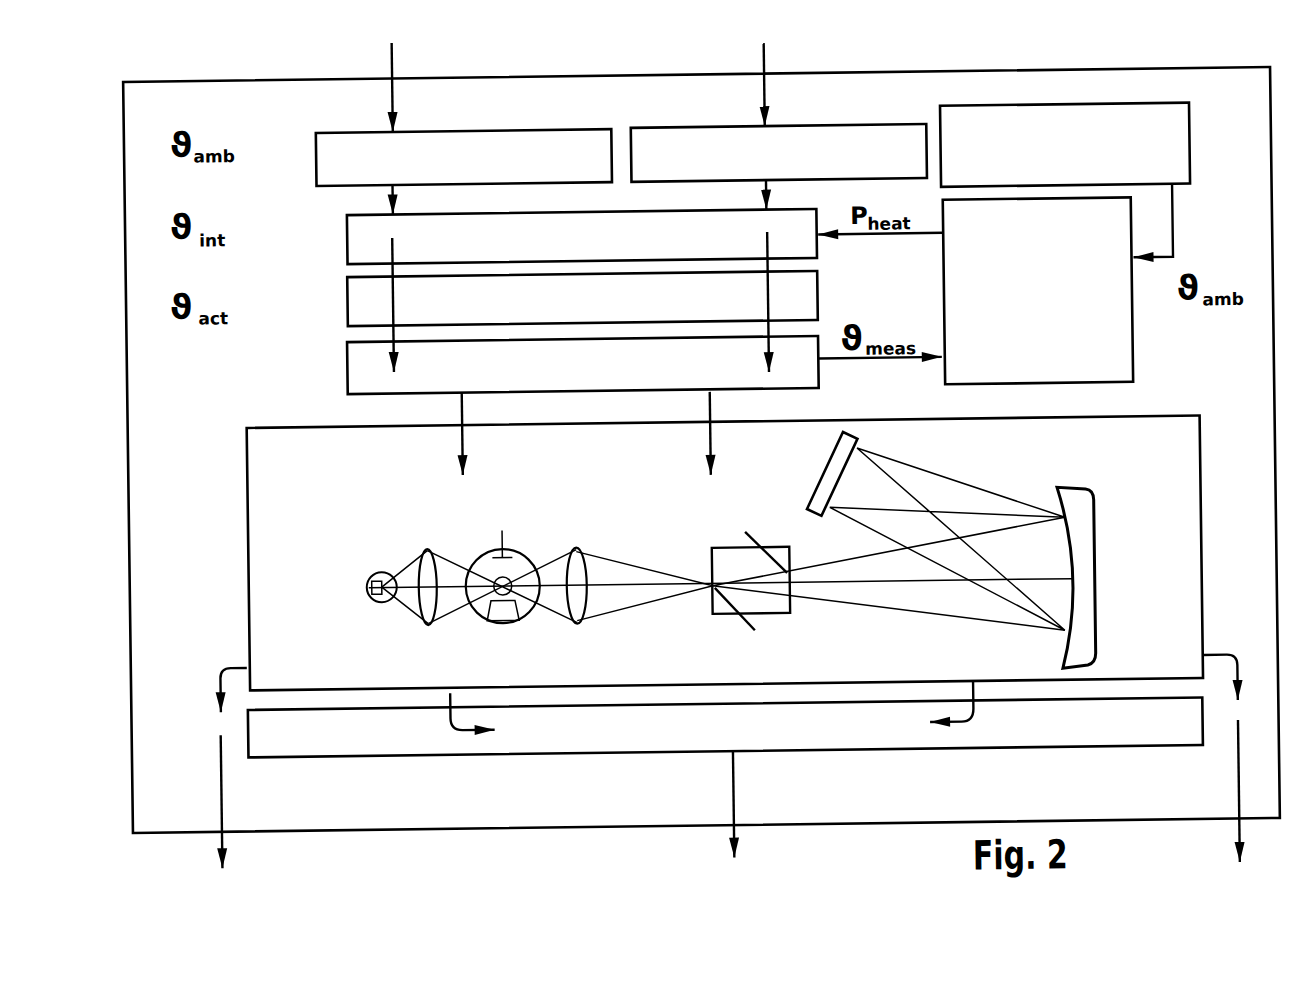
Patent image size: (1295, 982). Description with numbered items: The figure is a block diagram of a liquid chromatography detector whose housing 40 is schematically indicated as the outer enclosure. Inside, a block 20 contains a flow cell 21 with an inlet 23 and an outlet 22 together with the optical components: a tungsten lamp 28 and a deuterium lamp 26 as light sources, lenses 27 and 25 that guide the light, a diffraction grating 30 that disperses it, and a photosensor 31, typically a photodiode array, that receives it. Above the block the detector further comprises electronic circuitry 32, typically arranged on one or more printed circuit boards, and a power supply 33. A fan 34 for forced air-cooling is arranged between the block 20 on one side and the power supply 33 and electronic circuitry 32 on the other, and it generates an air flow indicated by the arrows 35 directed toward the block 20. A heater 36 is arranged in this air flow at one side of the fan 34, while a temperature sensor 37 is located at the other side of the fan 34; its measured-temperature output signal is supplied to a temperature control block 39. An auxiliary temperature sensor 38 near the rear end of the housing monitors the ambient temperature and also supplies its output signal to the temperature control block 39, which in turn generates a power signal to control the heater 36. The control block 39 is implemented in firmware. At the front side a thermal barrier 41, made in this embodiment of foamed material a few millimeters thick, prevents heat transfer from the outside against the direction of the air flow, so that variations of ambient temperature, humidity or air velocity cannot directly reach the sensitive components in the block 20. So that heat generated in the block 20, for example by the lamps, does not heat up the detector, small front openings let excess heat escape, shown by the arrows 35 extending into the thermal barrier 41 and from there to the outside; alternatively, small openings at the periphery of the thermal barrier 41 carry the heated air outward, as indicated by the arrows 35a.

The block 20 is at (257, 506).
The flow cell 21 is at (783, 616).
The outlet 22 is at (744, 532).
The inlet 23 is at (746, 633).
The lens 25 is at (578, 626).
The deuterium lamp 26 is at (498, 623).
The lens 27 is at (426, 624).
The tungsten lamp 28 is at (373, 601).
The diffraction grating 30 is at (1074, 502).
The photosensor 31 is at (860, 435).
The electronic circuitry 32 is at (834, 130).
The power supply 33 is at (557, 128).
The fan 34 is at (360, 298).
The arrows 35 is at (402, 58).
The arrows 35a is at (220, 802).
The heater 36 is at (361, 236).
The temperature sensor 37 is at (359, 362).
The auxiliary temperature sensor 38 is at (1184, 159).
The temperature control block 39 is at (1128, 370).
The housing 40 is at (1177, 71).
The thermal barrier 41 is at (848, 740).